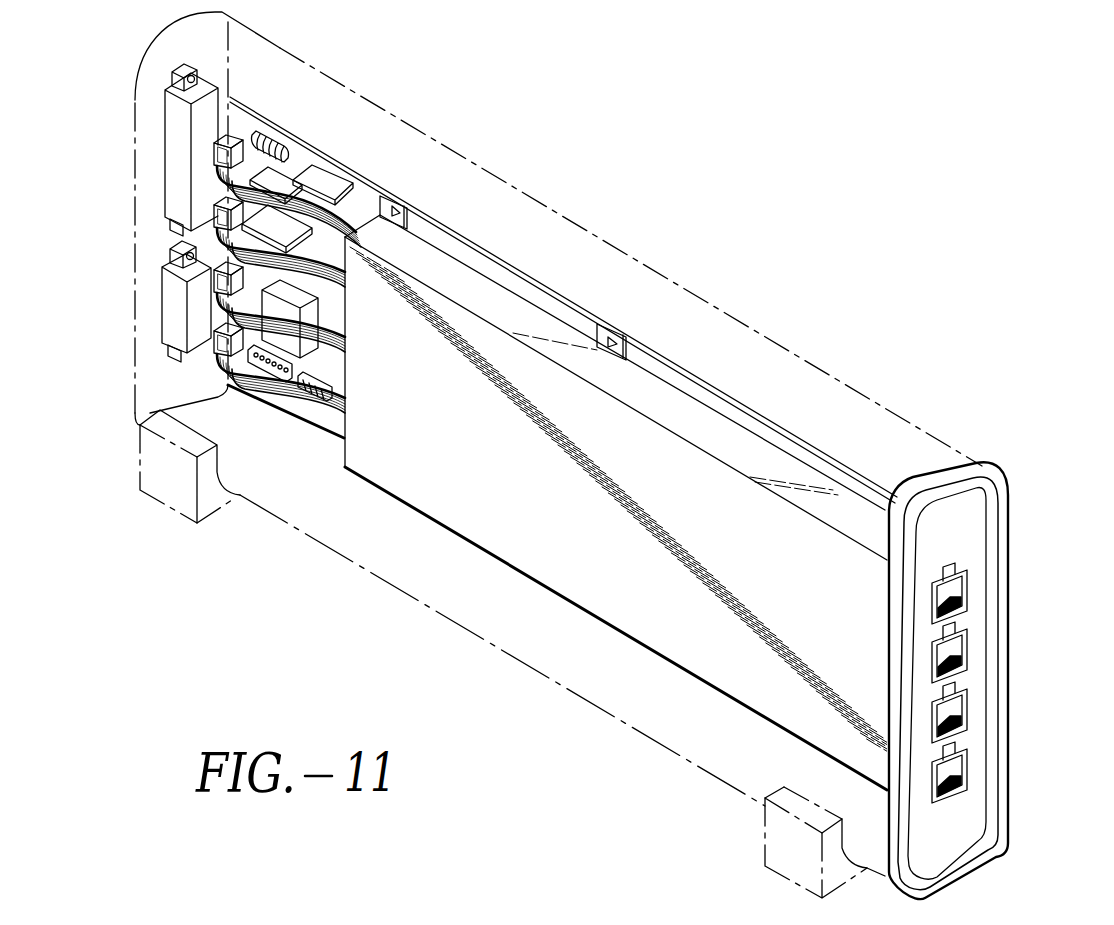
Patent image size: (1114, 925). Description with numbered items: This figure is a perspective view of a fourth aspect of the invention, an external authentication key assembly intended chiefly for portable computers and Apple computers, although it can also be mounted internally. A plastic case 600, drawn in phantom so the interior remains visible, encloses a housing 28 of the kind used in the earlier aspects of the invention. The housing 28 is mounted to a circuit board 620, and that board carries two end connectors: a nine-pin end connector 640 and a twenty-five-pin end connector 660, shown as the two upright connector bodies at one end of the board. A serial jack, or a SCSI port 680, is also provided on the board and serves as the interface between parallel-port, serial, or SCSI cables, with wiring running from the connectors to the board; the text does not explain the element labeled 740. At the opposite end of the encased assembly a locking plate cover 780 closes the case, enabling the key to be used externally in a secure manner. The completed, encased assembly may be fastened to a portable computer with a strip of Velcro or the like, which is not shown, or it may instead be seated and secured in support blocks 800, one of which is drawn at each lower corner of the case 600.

The housing 28 is at (663, 473).
The plastic case 600 is at (497, 647).
The circuit board 620 is at (577, 655).
The 9-pin end connector 640 is at (172, 325).
The 25-pin end connector 660 is at (165, 150).
The SCSI port 680 is at (227, 140).
The cable header 740 is at (278, 352).
The locking plate cover 780 is at (975, 518).
The support blocks 800 is at (163, 478).